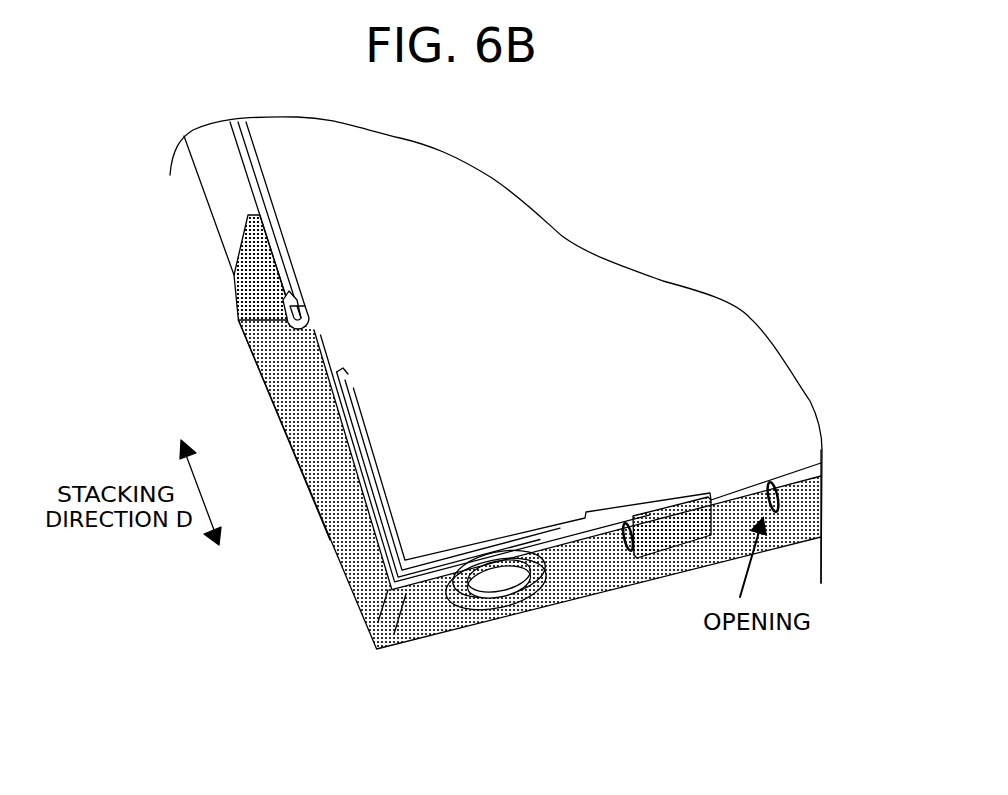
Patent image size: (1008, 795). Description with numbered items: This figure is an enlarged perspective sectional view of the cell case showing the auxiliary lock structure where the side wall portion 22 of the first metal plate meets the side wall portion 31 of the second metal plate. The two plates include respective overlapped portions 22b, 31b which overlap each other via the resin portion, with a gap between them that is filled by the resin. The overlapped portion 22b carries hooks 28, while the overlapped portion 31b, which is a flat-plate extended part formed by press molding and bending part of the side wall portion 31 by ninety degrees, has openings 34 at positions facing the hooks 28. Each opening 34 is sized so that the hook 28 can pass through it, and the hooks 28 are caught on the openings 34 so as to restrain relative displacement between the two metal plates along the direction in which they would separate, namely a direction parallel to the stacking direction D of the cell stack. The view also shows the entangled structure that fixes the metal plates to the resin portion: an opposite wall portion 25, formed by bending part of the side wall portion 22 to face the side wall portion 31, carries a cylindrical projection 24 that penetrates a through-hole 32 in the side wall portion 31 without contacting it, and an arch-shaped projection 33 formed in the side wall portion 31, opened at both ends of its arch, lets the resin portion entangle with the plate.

The side wall portion 22 is at (272, 179).
The overlapped portion 22b is at (354, 412).
The projection 24 is at (500, 563).
The opposite wall portion 25 is at (462, 545).
The hook 28 is at (262, 326).
The side wall portion 31 is at (574, 624).
The overlapped portion 31b is at (326, 514).
The through-hole 32 is at (480, 593).
The projection 33 is at (663, 556).
The opening 34 is at (283, 378).